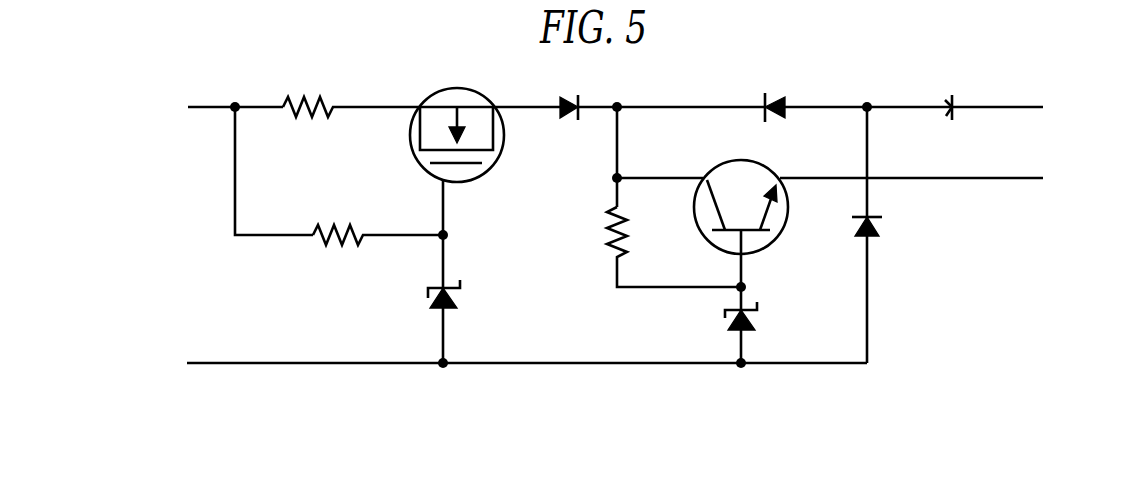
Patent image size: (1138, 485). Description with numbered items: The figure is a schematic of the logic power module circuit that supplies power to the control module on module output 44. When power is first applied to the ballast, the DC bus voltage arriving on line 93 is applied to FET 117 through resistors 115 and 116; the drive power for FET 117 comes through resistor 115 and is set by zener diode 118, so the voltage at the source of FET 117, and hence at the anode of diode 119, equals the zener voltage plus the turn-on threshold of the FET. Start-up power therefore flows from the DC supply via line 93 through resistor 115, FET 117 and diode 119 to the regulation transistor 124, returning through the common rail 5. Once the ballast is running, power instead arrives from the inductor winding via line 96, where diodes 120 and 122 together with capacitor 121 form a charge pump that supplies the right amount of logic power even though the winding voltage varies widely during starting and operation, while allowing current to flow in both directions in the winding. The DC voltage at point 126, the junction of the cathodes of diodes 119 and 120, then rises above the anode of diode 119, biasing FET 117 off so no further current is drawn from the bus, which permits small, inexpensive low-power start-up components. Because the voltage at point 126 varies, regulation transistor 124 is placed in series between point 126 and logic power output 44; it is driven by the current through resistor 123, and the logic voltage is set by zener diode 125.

The ground / common rail 5 is at (263, 363).
The module output 44 is at (942, 180).
The line 93 is at (213, 108).
The line 96 is at (1035, 107).
The resistor 115 is at (317, 100).
The resistor 116 is at (345, 222).
The FET 117 is at (490, 170).
The zener diode 118 is at (430, 303).
The diode 119 is at (578, 122).
The diode 120 is at (773, 97).
The capacitor 121 is at (953, 106).
The diode 122 is at (870, 237).
The resistor 123 is at (612, 253).
The regulation transistor 124 is at (760, 250).
The zener diode 125 is at (728, 328).
The point 126 is at (670, 107).